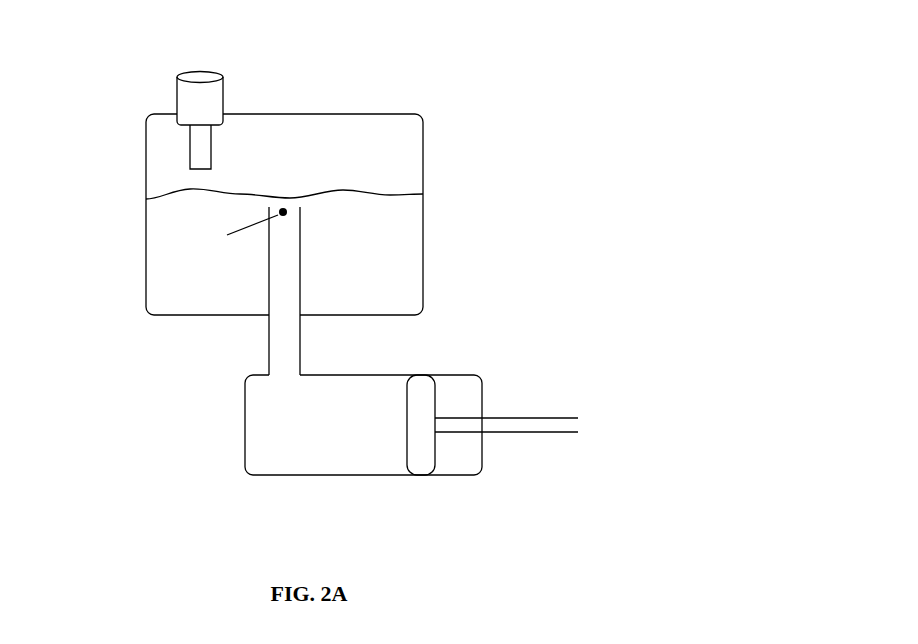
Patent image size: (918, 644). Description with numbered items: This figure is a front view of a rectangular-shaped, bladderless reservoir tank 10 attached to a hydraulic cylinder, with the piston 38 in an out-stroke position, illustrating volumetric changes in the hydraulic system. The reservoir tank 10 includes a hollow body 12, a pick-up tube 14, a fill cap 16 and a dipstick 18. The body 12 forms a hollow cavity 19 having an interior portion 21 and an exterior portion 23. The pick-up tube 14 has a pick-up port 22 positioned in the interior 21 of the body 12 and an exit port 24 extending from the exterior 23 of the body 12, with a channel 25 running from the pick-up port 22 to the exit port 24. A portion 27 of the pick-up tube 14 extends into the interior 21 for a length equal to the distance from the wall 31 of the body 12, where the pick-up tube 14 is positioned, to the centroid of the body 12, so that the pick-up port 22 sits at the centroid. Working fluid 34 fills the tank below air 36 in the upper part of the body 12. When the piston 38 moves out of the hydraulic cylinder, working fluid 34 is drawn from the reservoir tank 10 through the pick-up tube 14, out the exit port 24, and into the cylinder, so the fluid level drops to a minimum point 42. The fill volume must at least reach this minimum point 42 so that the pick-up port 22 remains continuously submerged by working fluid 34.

The reservoir tank 10 is at (262, 84).
The hollow body 12 is at (428, 170).
The pick-up tube 14 is at (265, 333).
The fill cap 16 is at (173, 92).
The dipstick 18 is at (188, 142).
The hollow cavity 19 is at (290, 135).
The interior portion 21 is at (377, 140).
The pick-up port 22 is at (290, 198).
The exterior portion 23 is at (142, 295).
The exit port 24 is at (283, 363).
The channel 25 is at (287, 253).
The portion of the pick-up tube 27 is at (300, 287).
The wall 31 is at (390, 317).
The working fluid 34 is at (403, 228).
The air 36 is at (403, 142).
The piston 38 is at (245, 432).
The minimum point 42 is at (146, 203).